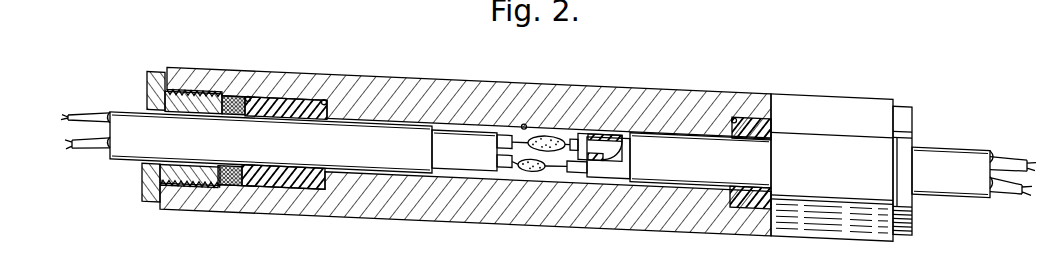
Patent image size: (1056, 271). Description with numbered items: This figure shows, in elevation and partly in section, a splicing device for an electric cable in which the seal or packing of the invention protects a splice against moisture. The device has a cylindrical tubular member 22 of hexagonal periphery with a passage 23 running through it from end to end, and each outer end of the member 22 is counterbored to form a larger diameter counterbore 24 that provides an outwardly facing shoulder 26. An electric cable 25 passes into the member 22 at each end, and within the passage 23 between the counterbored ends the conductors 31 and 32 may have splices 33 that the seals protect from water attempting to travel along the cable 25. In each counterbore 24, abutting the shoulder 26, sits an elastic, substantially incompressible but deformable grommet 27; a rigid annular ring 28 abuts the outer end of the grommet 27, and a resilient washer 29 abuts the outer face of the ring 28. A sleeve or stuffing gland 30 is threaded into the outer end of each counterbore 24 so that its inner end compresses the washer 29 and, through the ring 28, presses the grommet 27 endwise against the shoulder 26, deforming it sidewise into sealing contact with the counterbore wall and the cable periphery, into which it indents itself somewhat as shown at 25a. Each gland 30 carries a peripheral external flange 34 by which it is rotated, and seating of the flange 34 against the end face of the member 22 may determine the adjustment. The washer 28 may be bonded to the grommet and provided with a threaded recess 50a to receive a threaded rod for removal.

The cylindrical tubular member 22 is at (398, 73).
The passage 23 is at (524, 125).
The counterbore 24 is at (267, 100).
The electric cable 25 is at (200, 147).
The indentation in cable periphery 25a is at (292, 120).
The shoulder 26 is at (327, 98).
The grommet 27 is at (318, 192).
The annular ring 28 is at (238, 188).
The resilient washer 29 is at (230, 188).
The stuffing gland 30 is at (163, 167).
The conductor 31 is at (70, 115).
The conductor 32 is at (72, 152).
The splice 33 is at (553, 135).
The peripheral external flange 34 is at (152, 72).
The threaded recess 50a is at (235, 113).